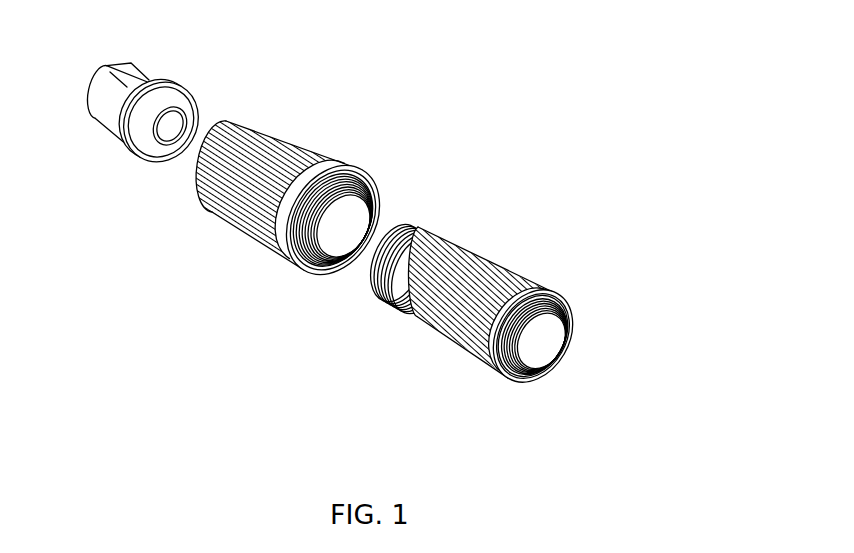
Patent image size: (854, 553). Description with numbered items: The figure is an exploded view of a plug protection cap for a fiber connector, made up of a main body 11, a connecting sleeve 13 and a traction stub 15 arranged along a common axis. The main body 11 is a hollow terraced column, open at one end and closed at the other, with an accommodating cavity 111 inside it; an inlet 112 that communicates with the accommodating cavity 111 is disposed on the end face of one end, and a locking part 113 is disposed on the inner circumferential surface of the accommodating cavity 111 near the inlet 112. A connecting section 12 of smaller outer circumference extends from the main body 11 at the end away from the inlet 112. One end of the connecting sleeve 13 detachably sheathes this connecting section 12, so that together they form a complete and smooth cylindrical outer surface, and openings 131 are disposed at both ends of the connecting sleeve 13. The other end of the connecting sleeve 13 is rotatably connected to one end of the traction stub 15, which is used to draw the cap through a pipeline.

The main body 11 is at (503, 231).
The accommodating cavity 111 is at (539, 358).
The inlet 112 is at (555, 337).
The locking part 113 is at (540, 313).
The connecting section 12 is at (373, 297).
The connecting sleeve 13 is at (287, 129).
The openings 131 is at (330, 277).
The traction stub 15 is at (167, 82).